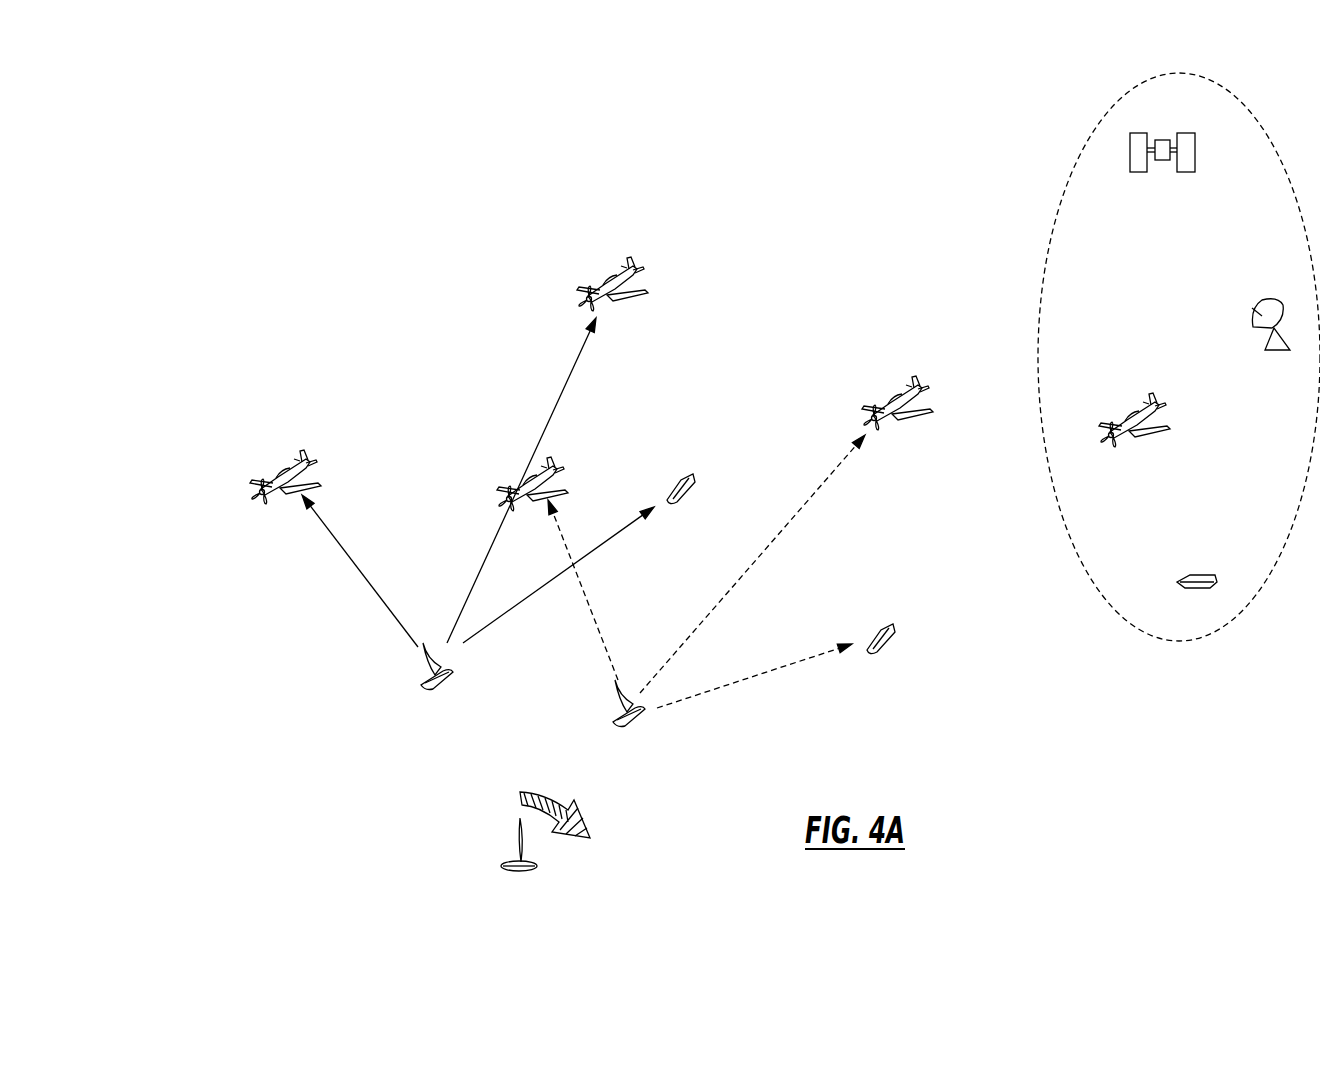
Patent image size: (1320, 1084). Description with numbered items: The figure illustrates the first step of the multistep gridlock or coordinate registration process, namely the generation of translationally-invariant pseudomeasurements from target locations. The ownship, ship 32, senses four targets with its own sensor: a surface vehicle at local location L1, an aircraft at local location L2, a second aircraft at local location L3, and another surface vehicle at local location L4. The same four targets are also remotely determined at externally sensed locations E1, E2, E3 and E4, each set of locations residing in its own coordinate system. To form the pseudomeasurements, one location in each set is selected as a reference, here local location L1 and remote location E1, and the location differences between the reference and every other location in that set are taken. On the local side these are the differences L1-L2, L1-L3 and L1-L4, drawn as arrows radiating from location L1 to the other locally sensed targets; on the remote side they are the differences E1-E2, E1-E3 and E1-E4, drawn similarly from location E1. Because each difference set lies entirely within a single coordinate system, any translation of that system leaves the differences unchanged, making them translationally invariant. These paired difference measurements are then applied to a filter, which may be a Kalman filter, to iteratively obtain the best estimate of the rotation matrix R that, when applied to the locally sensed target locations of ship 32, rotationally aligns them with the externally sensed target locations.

The locally sensed location of first target L1 is at (445, 685).
The locally sensed location of second target L2 is at (280, 468).
The locally sensed location of third target L3 is at (648, 287).
The locally sensed location of fourth target L4 is at (686, 474).
The remotely determined location of first target E1 is at (632, 727).
The remotely determined location of second target E2 is at (572, 486).
The remotely determined location of third target E3 is at (936, 405).
The remotely determined location of fourth target E4 is at (897, 637).
The local location difference L1-L2 is at (362, 577).
The local location difference L1-L3 is at (552, 415).
The local location difference L1-L4 is at (600, 555).
The remote location difference E1-E2 is at (602, 652).
The remote location difference E1-E3 is at (748, 570).
The remote location difference E1-E4 is at (725, 685).
The rotation matrix R is at (527, 790).
The ship 32 is at (522, 877).